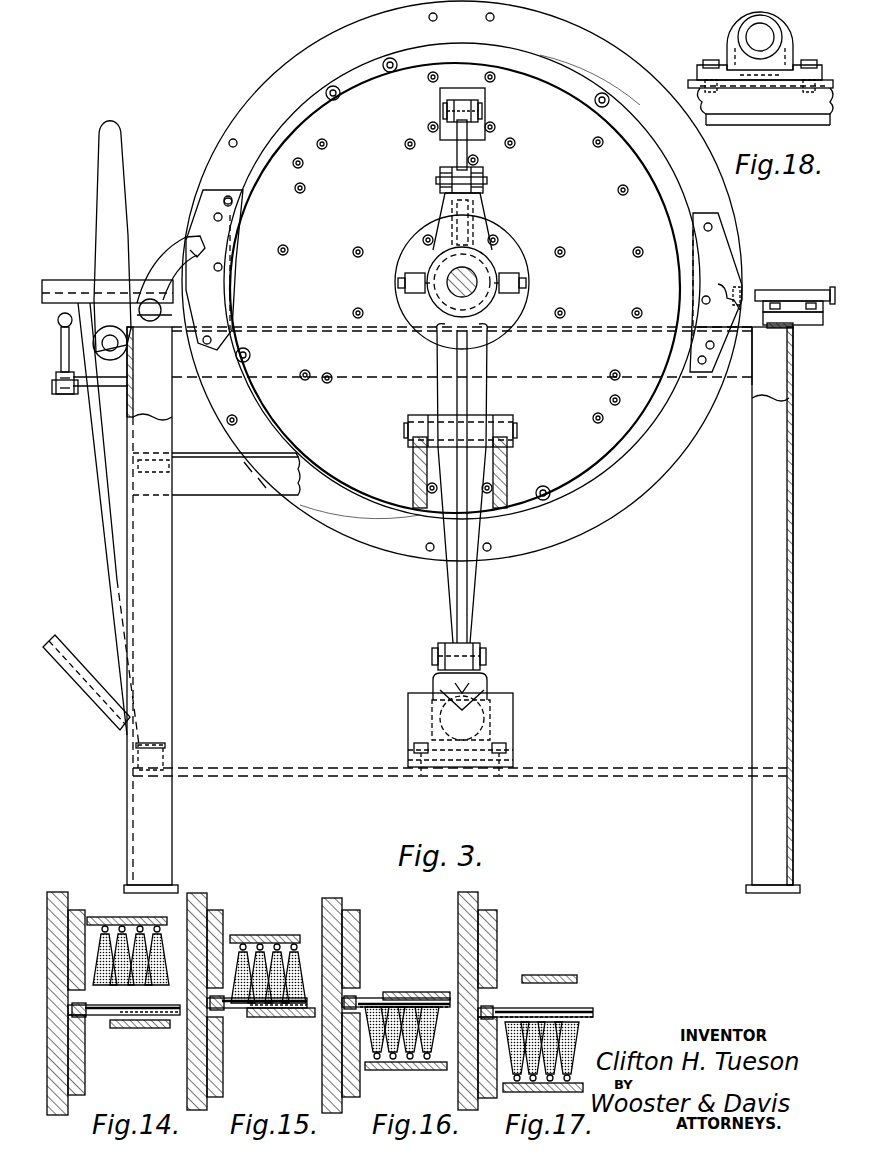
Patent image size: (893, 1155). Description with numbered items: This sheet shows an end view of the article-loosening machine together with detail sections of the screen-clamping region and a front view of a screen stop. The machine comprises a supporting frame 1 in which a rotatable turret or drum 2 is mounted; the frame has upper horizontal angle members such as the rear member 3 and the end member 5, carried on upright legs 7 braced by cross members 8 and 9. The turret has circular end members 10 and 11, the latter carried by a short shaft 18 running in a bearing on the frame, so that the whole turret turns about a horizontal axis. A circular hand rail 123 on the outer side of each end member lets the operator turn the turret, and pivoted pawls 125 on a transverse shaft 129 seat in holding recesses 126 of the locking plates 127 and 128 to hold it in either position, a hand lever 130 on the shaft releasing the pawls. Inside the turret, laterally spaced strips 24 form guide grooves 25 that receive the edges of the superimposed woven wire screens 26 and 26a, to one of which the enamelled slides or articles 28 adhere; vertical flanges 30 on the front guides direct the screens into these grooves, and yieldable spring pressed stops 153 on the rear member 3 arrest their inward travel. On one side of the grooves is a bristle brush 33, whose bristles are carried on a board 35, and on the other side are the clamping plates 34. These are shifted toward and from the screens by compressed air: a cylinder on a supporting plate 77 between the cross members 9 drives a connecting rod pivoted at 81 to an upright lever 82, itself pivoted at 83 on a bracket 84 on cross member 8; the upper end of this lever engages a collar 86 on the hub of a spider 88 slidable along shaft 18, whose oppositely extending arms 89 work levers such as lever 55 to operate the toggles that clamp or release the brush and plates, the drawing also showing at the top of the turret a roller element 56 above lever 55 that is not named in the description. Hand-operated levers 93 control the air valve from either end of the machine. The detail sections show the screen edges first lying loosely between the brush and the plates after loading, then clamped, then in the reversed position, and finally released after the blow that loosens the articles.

In FIG. 3, the supporting frame 1 is at (104, 743).
In FIG. 3, the rotatable turret or drum 2 is at (626, 40).
In FIG. 3, the upper horizontally arranged angle member 3 is at (793, 352).
In FIG. 18, the upper horizontally arranged angle member 3 is at (750, 112).
In FIG. 3, the upper horizontally arranged angle member 5 is at (364, 380).
In FIG. 3, the upright supporting legs 7 is at (165, 616).
In FIG. 3, the cross member 8 is at (252, 500).
In FIG. 3, the cross member 9 is at (320, 778).
In FIG. 14, the upright end member 10 is at (56, 893).
In FIG. 15, the upright end member 10 is at (198, 897).
In FIG. 16, the upright end member 10 is at (333, 903).
In FIG. 17, the upright end member 10 is at (478, 898).
In FIG. 3, the upright end member 11 is at (384, 543).
In FIG. 3, the short shaft 18 is at (472, 276).
In FIG. 14, the laterally spaced strips 24 is at (76, 912).
In FIG. 15, the laterally spaced strips 24 is at (220, 920).
In FIG. 16, the laterally spaced strips 24 is at (356, 920).
In FIG. 17, the laterally spaced strips 24 is at (492, 922).
In FIG. 14, the guide grooves 25 is at (86, 995).
In FIG. 15, the guide grooves 25 is at (222, 1010).
In FIG. 16, the guide grooves 25 is at (362, 998).
In FIG. 17, the guide grooves 25 is at (496, 1004).
In FIG. 14, the woven wire screen 26 is at (145, 1028).
In FIG. 15, the woven wire screen 26 is at (235, 1023).
In FIG. 16, the woven wire screen 26 is at (375, 998).
In FIG. 17, the woven wire screen 26 is at (548, 1010).
In FIG. 14, the woven wire screen 26a is at (165, 1012).
In FIG. 15, the woven wire screen 26a is at (312, 1084).
In FIG. 16, the woven wire screen 26a is at (374, 1008).
In FIG. 17, the woven wire screen 26a is at (593, 1016).
In FIG. 14, the slides or articles 28 is at (120, 1015).
In FIG. 15, the slides or articles 28 is at (268, 1010).
In FIG. 16, the slides or articles 28 is at (431, 996).
In FIG. 17, the slides or articles 28 is at (568, 1012).
In FIG. 3, the vertical flanges 30 is at (72, 290).
In FIG. 14, the bristle brush 33 is at (148, 962).
In FIG. 15, the bristle brush 33 is at (290, 972).
In FIG. 16, the bristle brush 33 is at (430, 1024).
In FIG. 17, the bristle brush 33 is at (570, 1030).
In FIG. 14, the clamping plates 34 is at (138, 1028).
In FIG. 15, the clamping plates 34 is at (287, 1018).
In FIG. 16, the clamping plates 34 is at (424, 994).
In FIG. 17, the clamping plates 34 is at (558, 974).
In FIG. 14, the board 35 is at (136, 917).
In FIG. 15, the board 35 is at (265, 935).
In FIG. 16, the board 35 is at (415, 1071).
In FIG. 17, the board 35 is at (528, 1092).
In FIG. 3, the lever 55 is at (467, 150).
In FIG. 3, the roller 56 is at (485, 113).
In FIG. 3, the supporting plate 77 is at (518, 764).
In FIG. 3, the pivotal connection 81 is at (490, 658).
In FIG. 3, the upright lever 82 is at (478, 595).
In FIG. 3, the pivot 83 is at (515, 431).
In FIG. 3, the bracket 84 is at (508, 470).
In FIG. 3, the collar 86 is at (492, 268).
In FIG. 3, the spider 88 is at (493, 199).
In FIG. 3, the oppositely extending arms 89 is at (436, 212).
In FIG. 3, the hand-operated levers 93 is at (62, 362).
In FIG. 3, the circular hand rail 123 is at (582, 88).
In FIG. 3, the pivoted pawls 125 is at (157, 257).
In FIG. 3, the holding recesses 126 is at (197, 252).
In FIG. 3, the locking plate 127 is at (207, 197).
In FIG. 3, the locking plate 128 is at (718, 243).
In FIG. 3, the transverse shaft 129 is at (118, 345).
In FIG. 3, the hand lever 130 is at (100, 238).
In FIG. 3, the yieldable spring pressed stops 153 is at (750, 290).
In FIG. 18, the yieldable spring pressed stops 153 is at (752, 36).